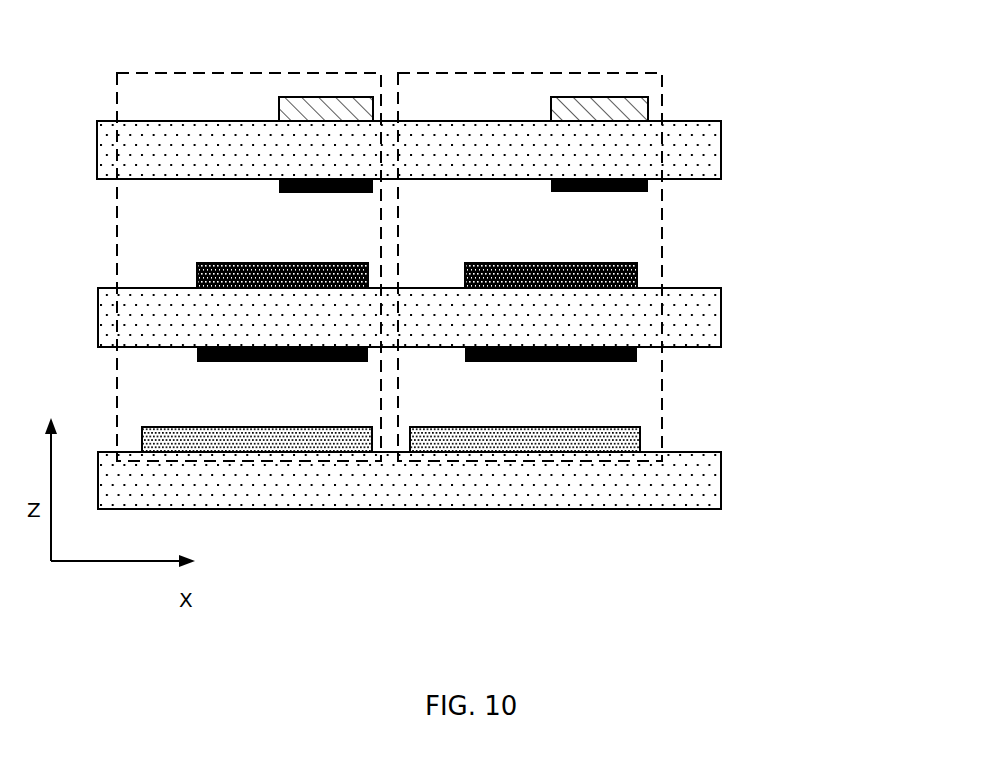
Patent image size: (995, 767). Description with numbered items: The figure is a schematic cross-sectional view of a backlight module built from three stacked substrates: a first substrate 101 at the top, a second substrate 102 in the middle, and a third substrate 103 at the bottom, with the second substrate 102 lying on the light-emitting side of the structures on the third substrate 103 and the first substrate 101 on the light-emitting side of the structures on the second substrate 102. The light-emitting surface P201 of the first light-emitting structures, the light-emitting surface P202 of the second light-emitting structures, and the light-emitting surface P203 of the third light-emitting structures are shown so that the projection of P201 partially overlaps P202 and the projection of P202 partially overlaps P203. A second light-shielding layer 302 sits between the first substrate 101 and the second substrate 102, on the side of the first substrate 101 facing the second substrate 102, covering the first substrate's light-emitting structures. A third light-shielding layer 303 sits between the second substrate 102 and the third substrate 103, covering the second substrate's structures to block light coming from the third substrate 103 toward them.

The first substrate 101 is at (721, 145).
The second substrate 102 is at (721, 317).
The third substrate 103 is at (721, 484).
The second light-shielding layer 302 is at (648, 188).
The third light-shielding layer 303 is at (637, 355).
The light-emitting surface of the first light-emitting structure P201 is at (298, 97).
The light-emitting surface of the second light-emitting structure P202 is at (197, 283).
The light-emitting surface of the third light-emitting structure P203 is at (142, 428).